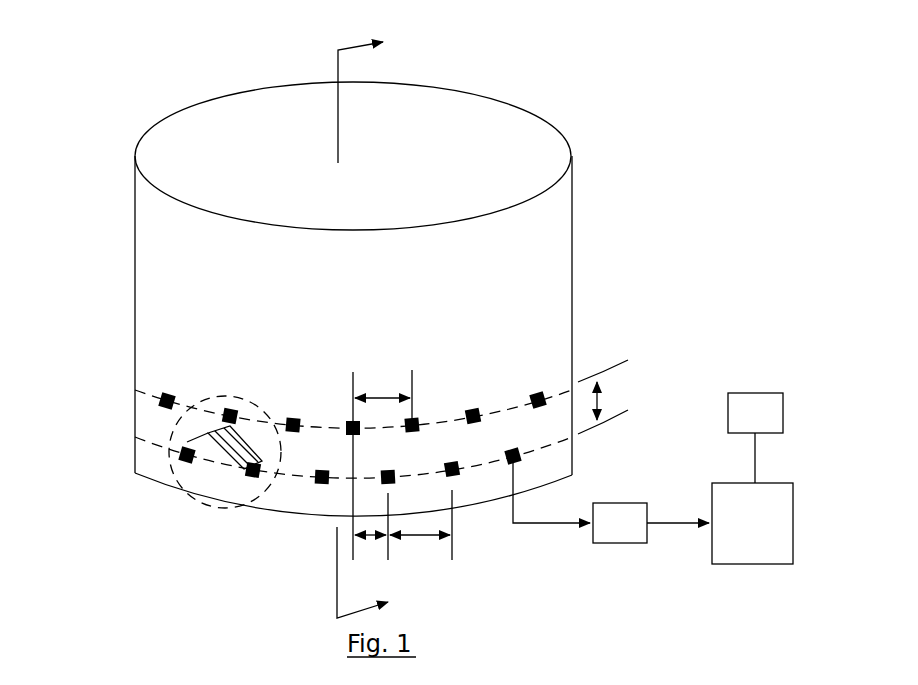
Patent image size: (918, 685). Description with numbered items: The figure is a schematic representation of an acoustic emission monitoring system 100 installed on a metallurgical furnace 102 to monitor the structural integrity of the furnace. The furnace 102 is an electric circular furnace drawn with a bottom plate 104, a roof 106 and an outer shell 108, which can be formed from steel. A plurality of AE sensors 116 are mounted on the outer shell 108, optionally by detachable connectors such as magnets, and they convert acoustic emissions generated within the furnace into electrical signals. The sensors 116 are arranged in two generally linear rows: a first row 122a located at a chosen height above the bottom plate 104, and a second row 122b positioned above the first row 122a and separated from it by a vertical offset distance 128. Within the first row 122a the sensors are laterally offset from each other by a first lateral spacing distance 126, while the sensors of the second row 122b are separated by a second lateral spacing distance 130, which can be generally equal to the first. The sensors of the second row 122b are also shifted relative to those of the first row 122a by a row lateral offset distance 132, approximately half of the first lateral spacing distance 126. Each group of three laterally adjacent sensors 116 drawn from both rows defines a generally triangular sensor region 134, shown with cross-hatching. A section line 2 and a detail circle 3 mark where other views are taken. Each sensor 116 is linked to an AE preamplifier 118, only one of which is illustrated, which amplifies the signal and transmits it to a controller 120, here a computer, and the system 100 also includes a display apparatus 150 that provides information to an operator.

The AE monitoring system 100 is at (660, 365).
The metallurgical furnace 102 is at (128, 72).
The bottom plate 104 is at (258, 505).
The roof 106 is at (232, 133).
The outer shell 108 is at (183, 312).
The AE sensors 116 is at (292, 421).
The AE preamplifier 118 is at (628, 532).
The controller 120 is at (743, 552).
The first row 122a is at (130, 433).
The second row 122b is at (130, 385).
The first lateral spacing distance 126 is at (420, 540).
The vertical offset distance 128 is at (598, 401).
The second lateral spacing distance 130 is at (378, 397).
The row lateral offset distance 132 is at (373, 540).
The sensor region 134 is at (262, 460).
The display apparatus 150 is at (760, 402).
The section line 2 is at (370, 326).
The detail region 3 is at (203, 507).